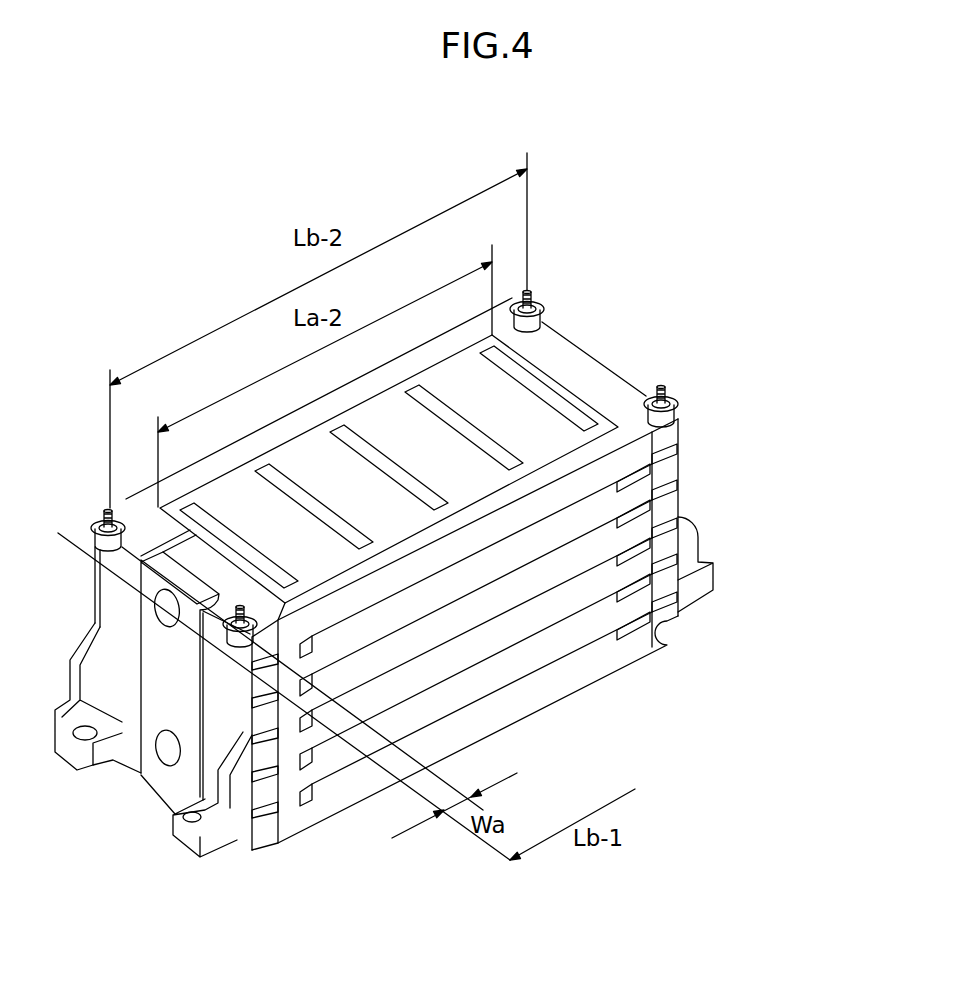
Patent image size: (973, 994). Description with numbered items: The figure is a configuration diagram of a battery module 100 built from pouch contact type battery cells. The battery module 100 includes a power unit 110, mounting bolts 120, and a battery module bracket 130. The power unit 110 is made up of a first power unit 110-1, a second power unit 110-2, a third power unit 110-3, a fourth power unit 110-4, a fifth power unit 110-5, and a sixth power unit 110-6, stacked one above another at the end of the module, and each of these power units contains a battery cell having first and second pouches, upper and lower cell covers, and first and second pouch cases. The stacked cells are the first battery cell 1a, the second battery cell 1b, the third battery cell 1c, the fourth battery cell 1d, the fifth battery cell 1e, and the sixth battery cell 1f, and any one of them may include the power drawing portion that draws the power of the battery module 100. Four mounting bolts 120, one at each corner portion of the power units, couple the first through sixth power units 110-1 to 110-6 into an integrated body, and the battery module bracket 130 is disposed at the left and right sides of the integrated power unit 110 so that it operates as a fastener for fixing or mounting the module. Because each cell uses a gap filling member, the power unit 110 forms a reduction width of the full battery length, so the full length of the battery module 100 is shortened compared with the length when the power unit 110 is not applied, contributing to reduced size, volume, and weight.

The battery module 100 is at (690, 378).
The power unit 110 is at (880, 423).
The first power unit 110-1 is at (668, 627).
The second power unit 110-2 is at (668, 580).
The third power unit 110-3 is at (670, 547).
The fourth power unit 110-4 is at (670, 505).
The fifth power unit 110-5 is at (672, 470).
The sixth power unit 110-6 is at (668, 432).
The mounting bolt 120 is at (108, 511).
The battery module bracket 130 is at (103, 714).
The first battery cell 1a is at (547, 680).
The second battery cell 1b is at (572, 637).
The third battery cell 1c is at (575, 597).
The fourth battery cell 1d is at (578, 566).
The fifth battery cell 1e is at (516, 422).
The sixth battery cell 1f is at (547, 540).